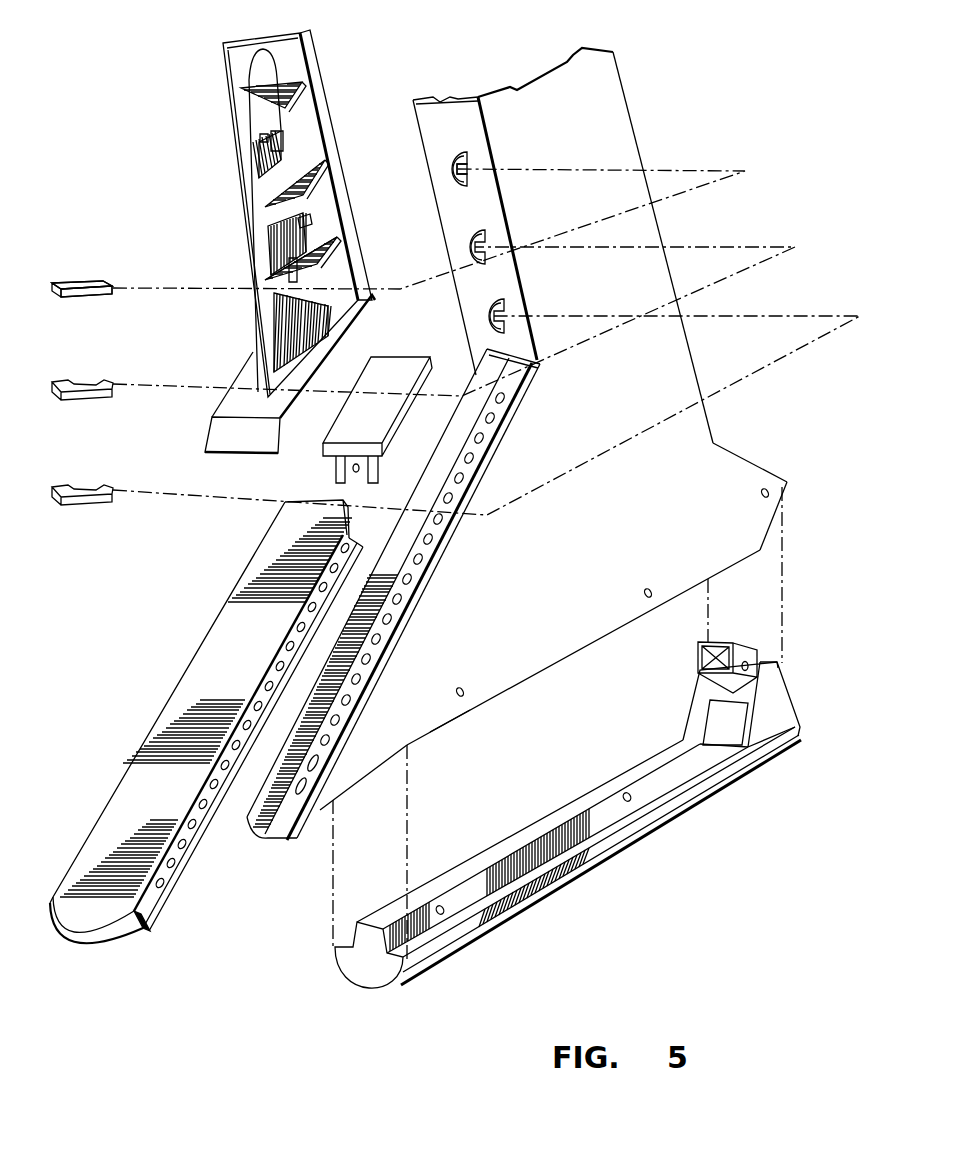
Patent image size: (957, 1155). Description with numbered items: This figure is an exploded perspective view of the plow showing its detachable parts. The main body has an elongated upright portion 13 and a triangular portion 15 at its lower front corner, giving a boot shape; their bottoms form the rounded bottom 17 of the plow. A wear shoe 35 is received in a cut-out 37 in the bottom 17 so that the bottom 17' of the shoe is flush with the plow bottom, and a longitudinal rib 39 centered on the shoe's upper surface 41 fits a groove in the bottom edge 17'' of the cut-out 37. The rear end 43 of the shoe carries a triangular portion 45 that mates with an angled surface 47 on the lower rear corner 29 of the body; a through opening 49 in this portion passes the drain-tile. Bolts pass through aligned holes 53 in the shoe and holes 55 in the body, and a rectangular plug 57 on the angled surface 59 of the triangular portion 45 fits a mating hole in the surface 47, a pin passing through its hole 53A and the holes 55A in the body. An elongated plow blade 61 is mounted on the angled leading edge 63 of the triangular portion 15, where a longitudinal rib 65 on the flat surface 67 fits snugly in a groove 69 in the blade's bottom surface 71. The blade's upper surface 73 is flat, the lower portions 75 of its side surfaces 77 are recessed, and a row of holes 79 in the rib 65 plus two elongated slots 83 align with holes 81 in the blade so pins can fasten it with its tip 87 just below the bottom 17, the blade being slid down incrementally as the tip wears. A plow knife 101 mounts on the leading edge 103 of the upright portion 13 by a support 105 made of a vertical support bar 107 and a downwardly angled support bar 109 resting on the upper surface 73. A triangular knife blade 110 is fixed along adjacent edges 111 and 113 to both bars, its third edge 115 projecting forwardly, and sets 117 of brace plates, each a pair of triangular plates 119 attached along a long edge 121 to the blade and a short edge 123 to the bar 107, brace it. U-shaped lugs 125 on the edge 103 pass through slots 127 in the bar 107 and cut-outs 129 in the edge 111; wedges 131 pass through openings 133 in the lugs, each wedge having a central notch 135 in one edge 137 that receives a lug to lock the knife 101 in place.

The upright portion 13 is at (670, 367).
The triangular portion 15 is at (541, 552).
The bottom 17 is at (363, 788).
The bottom of the shoe 17' is at (714, 794).
The bottom edge of the cut-out 17'' is at (466, 724).
The lower rear corner 29 is at (780, 477).
The wear shoe 35 is at (614, 857).
The cut-out 37 is at (543, 675).
The longitudinal rib 39 is at (550, 805).
The upper surface 41 is at (431, 935).
The rear end 43 is at (800, 727).
The triangular portion 45 is at (703, 703).
The angled surface 47 is at (772, 520).
The through opening 49 is at (729, 728).
The holes 53 is at (627, 797).
The hole 53A is at (755, 663).
The holes 55 is at (652, 592).
The holes 55A is at (762, 493).
The rectangular plug 57 is at (700, 653).
The angled surface 59 is at (762, 670).
The plow blade 61 is at (172, 693).
The leading edge 63 is at (476, 366).
The longitudinal rib 65 is at (397, 610).
The flat surface 67 is at (497, 435).
The longitudinal groove 69 is at (366, 468).
The bottom surface 71 is at (138, 923).
The upper surface 73 is at (133, 797).
The lower portions 75 is at (150, 902).
The side surfaces 77 is at (165, 852).
The holes 79 is at (378, 641).
The holes 81 is at (348, 697).
The elongated slots 83 is at (320, 773).
The tip 87 is at (72, 933).
The plow knife 101 is at (322, 62).
The leading edge 103 is at (452, 112).
The support 105 is at (333, 93).
The vertical support bar 107 is at (325, 135).
The support bar 109 is at (355, 332).
The knife blade 110 is at (250, 184).
The edge 111 is at (290, 150).
The edge 113 is at (330, 322).
The third edge 115 is at (257, 222).
The sets of brace plates 117 is at (243, 90).
The triangular plates 119 is at (338, 240).
The long edge 121 is at (295, 272).
The short edge 123 is at (312, 222).
The U-shaped lugs 125 is at (457, 187).
The slots 127 is at (273, 147).
The cut-outs 129 is at (268, 138).
The wedges 131 is at (68, 280).
The openings 133 is at (462, 158).
The central notch 135 is at (90, 282).
The edge 137 is at (105, 280).